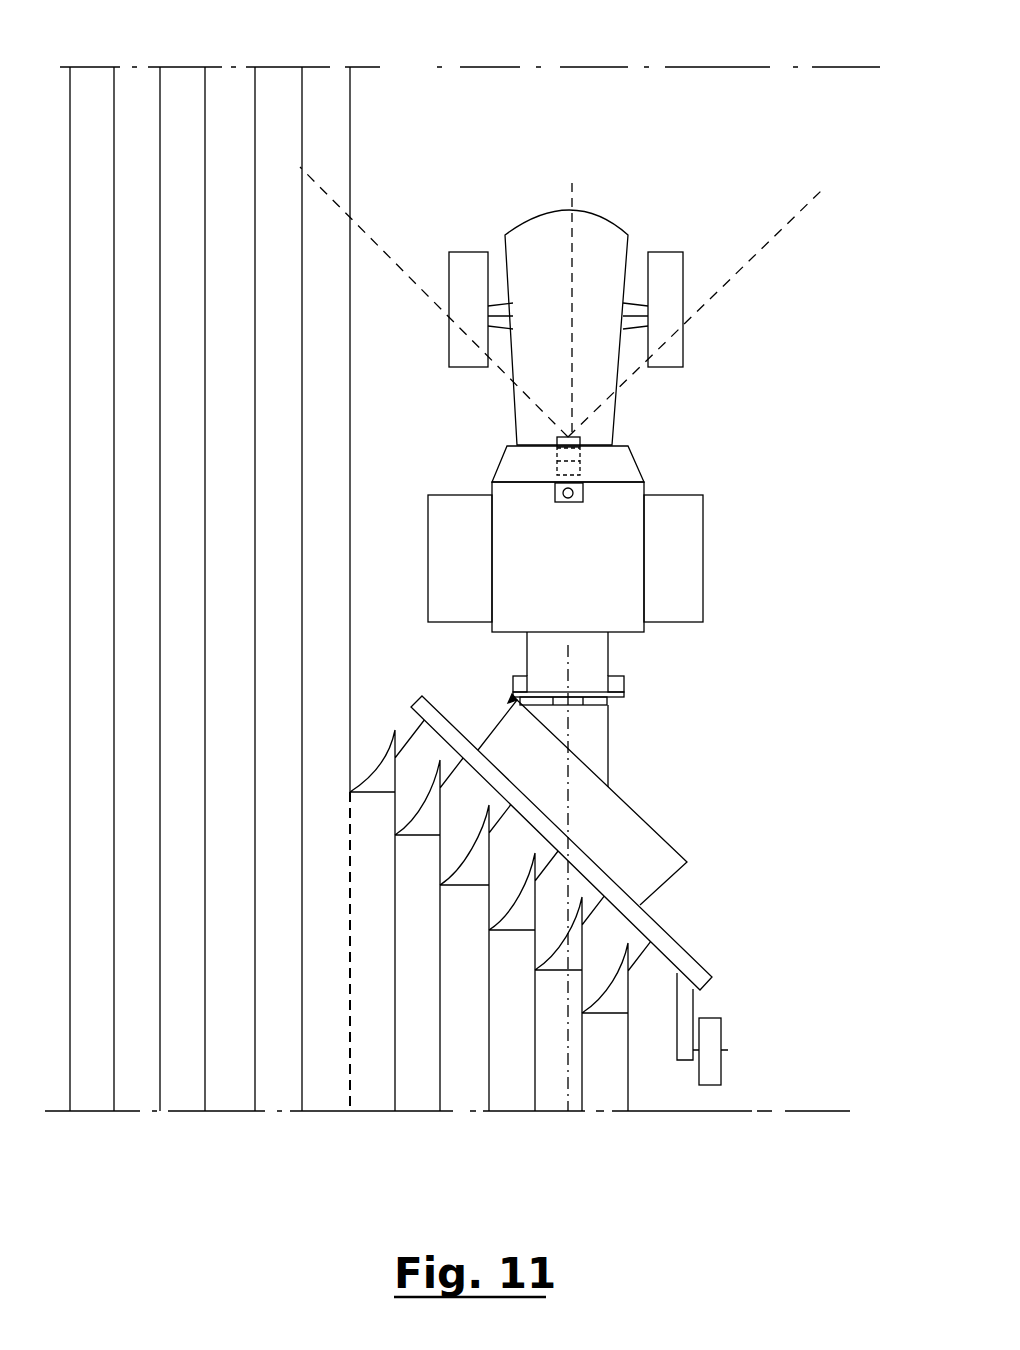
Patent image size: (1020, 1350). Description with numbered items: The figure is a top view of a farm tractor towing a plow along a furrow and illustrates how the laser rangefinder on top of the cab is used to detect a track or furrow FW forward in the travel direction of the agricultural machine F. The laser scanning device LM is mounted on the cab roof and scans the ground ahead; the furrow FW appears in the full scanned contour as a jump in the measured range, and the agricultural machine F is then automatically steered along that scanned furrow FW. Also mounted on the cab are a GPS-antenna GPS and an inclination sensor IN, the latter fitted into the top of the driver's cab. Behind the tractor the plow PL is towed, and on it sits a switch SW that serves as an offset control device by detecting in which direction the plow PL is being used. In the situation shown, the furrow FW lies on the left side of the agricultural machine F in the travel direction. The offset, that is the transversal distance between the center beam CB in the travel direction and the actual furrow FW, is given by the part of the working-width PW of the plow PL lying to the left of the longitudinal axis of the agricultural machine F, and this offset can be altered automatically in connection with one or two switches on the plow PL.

The furrow FW is at (330, 100).
The center beam CB is at (573, 185).
The laser scanning device LM is at (580, 450).
The inclination sensor IN is at (581, 465).
The GPS-antenna GPS is at (583, 495).
The agricultural machine F is at (593, 563).
The switch SW is at (620, 680).
The plow PL is at (627, 840).
The working-width PW is at (567, 1062).